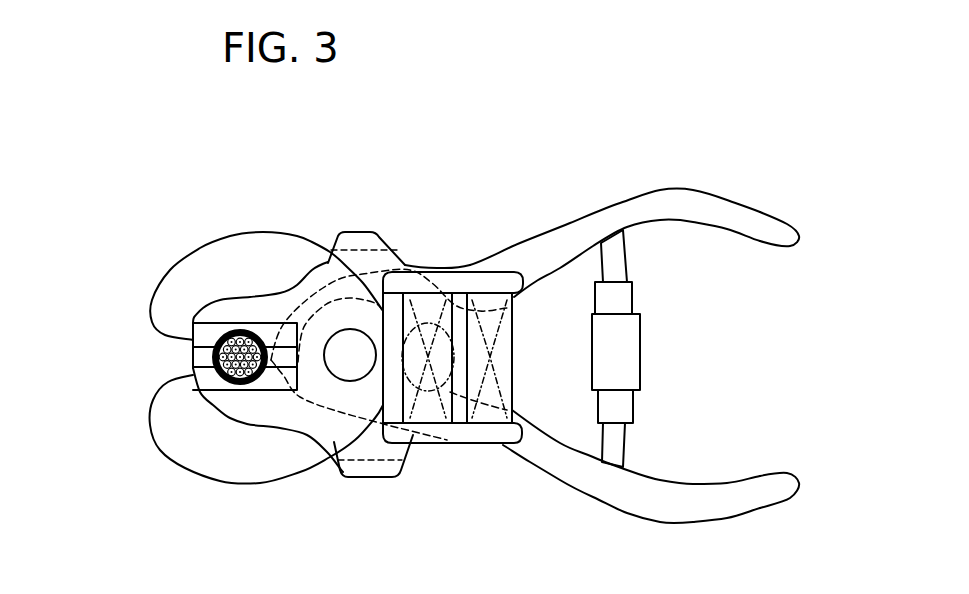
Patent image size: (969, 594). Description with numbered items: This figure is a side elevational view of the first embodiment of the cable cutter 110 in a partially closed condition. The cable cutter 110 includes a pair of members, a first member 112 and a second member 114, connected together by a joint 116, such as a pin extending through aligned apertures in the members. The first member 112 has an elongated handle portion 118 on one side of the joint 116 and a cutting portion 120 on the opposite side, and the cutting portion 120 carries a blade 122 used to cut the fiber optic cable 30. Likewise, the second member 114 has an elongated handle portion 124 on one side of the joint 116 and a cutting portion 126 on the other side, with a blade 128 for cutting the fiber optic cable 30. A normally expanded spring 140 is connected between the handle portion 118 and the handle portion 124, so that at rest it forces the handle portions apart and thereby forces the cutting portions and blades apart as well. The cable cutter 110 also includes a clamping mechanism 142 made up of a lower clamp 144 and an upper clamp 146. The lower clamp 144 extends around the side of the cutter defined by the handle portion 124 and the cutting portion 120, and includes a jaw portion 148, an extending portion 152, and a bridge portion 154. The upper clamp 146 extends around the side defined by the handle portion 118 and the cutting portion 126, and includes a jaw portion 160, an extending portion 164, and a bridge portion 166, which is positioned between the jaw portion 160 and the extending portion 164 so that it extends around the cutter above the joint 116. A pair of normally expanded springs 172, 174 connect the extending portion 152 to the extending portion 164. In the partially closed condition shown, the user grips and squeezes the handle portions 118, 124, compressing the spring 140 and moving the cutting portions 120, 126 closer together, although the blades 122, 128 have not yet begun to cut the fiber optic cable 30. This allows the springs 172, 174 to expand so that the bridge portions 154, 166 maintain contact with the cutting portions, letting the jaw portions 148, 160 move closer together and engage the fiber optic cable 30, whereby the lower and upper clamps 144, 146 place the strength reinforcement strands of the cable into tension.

The cable cutter 110 is at (427, 133).
The clamping mechanism 142 is at (331, 173).
The bridge portion 166 is at (372, 232).
The bridge portion 154 is at (374, 470).
The upper clamp 146 is at (413, 260).
The jaw portion 160 is at (282, 302).
The jaw portion 148 is at (270, 407).
The cutting portion 126 is at (234, 246).
The cutting portion 120 is at (220, 460).
The blade 128 is at (180, 343).
The blade 122 is at (180, 370).
The fiber optic cable 30 is at (212, 357).
The joint 116 is at (343, 362).
The extending portion 164 is at (481, 280).
The extending portion 152 is at (467, 433).
The lower clamp 144 is at (413, 437).
The spring 172 is at (447, 307).
The spring 174 is at (507, 340).
The first member 112 is at (574, 230).
The handle portion 118 is at (686, 200).
The second member 114 is at (587, 478).
The handle portion 124 is at (704, 510).
The spring 140 is at (632, 349).